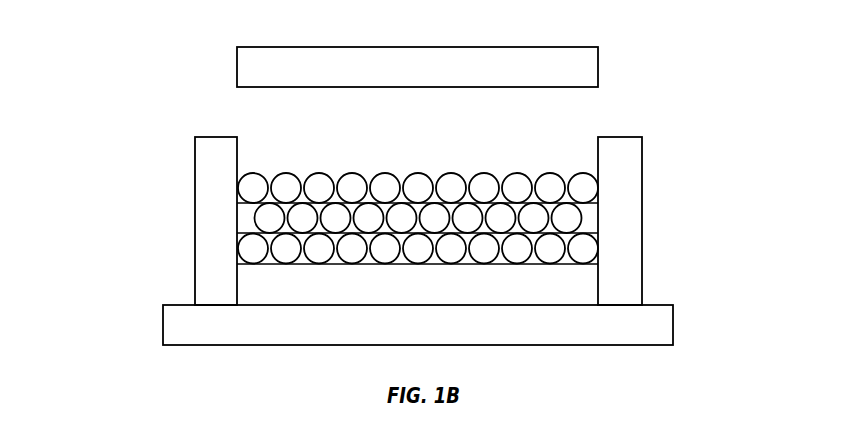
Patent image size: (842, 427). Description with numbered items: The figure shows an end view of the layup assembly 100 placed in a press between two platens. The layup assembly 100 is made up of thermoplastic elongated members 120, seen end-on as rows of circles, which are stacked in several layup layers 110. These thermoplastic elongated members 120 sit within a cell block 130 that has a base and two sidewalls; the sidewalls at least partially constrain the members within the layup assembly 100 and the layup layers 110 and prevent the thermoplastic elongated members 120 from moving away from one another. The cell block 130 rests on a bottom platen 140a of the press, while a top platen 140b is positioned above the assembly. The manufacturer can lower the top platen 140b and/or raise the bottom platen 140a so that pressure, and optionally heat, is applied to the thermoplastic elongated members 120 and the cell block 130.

The layup assembly 100 is at (460, 203).
The layup layers 110 is at (346, 221).
The thermoplastic elongated members 120 is at (287, 177).
The cell block 130 is at (650, 273).
The bottom platen 140a is at (653, 329).
The top platen 140b is at (589, 72).